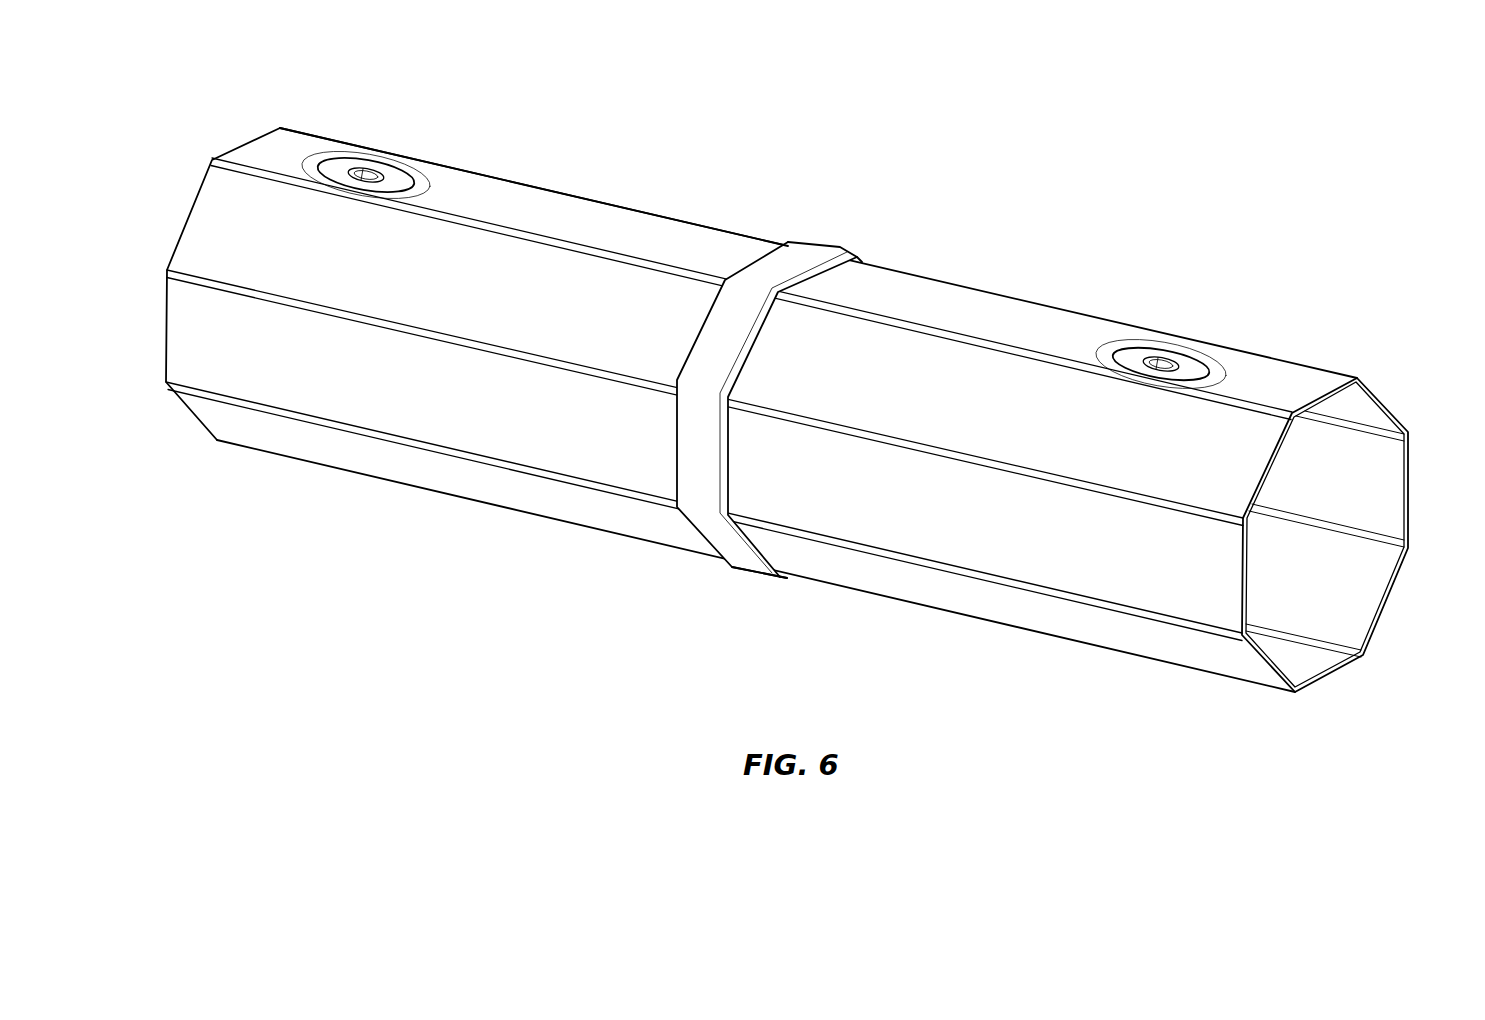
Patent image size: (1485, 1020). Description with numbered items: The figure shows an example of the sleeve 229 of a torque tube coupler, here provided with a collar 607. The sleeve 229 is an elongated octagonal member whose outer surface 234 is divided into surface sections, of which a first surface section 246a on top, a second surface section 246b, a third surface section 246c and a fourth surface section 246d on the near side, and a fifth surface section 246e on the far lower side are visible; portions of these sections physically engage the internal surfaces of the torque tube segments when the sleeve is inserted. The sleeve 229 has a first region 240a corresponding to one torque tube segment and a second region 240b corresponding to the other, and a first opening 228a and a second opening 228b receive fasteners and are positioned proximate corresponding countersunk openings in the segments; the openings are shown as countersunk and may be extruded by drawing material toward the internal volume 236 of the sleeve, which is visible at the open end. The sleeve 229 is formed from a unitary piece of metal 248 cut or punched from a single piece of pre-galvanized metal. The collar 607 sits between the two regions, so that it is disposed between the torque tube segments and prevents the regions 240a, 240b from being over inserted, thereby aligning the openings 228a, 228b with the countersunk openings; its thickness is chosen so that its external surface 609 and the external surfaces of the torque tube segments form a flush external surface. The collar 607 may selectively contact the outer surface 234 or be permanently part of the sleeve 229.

The sleeve 229 is at (262, 145).
The first opening 228a is at (367, 163).
The second opening 228b is at (1162, 352).
The outer surface 234 is at (572, 205).
The internal volume 236 is at (1388, 490).
The first region 240a is at (977, 300).
The second region 240b is at (695, 238).
The first surface section 246a is at (482, 188).
The second surface section 246b is at (195, 237).
The third surface section 246c is at (178, 340).
The fourth surface section 246d is at (242, 428).
The fifth surface section 246e is at (1332, 676).
The unitary piece of metal 248 is at (1216, 678).
The collar 607 is at (795, 252).
The external surface 609 is at (742, 565).